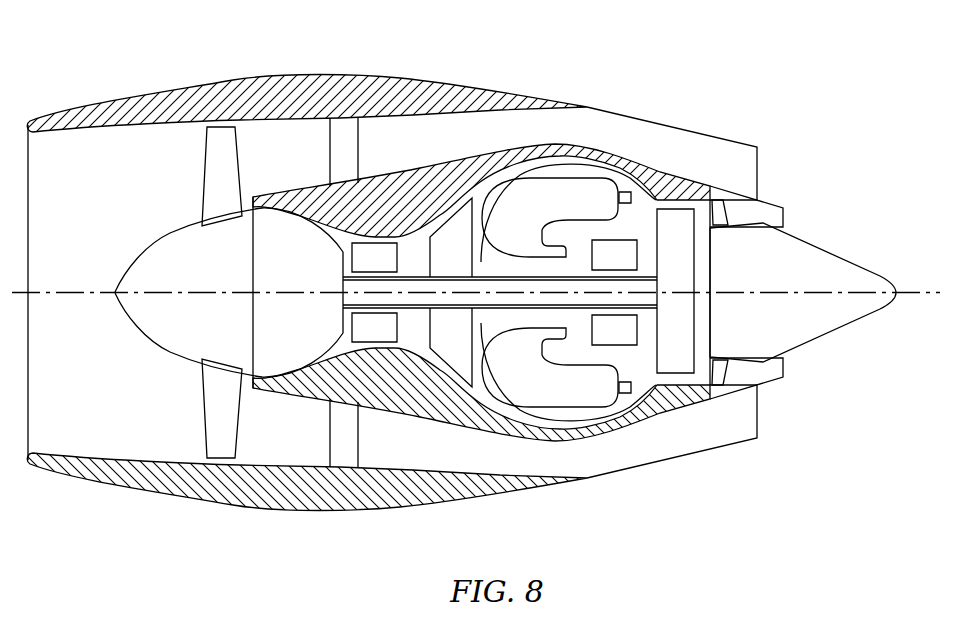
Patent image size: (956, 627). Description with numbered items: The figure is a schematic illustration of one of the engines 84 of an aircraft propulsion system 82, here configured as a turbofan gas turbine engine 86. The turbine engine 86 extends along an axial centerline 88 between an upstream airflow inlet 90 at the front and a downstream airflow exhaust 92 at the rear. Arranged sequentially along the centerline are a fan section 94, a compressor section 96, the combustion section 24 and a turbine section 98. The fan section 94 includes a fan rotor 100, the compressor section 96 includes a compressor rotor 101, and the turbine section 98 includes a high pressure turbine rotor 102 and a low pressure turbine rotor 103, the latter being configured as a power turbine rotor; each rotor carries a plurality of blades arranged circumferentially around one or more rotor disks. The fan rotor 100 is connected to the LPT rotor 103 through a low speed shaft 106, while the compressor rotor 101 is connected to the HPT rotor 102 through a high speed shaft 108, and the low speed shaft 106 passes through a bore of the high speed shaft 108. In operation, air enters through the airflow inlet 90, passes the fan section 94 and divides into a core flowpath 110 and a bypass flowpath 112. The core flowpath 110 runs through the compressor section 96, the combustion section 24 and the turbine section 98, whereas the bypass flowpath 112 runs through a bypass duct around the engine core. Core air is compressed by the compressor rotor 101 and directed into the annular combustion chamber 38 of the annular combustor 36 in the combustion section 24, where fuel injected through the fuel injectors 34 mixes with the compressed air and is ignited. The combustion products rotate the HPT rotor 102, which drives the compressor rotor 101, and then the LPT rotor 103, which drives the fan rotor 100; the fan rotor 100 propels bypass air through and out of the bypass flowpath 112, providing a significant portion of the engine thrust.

The aircraft propulsion system 82 is at (680, 92).
The engine 84 is at (118, 411).
The turbofan gas turbine engine 86 is at (222, 292).
The axial centerline 88 is at (922, 290).
The upstream airflow inlet 90 is at (30, 188).
The downstream airflow exhaust 92 is at (783, 215).
The fan section 94 is at (165, 160).
The compressor section 96 is at (412, 253).
The turbine section 98 is at (643, 228).
The fan rotor 100 is at (155, 344).
The compressor rotor 101 is at (440, 355).
The high pressure turbine rotor 102 is at (637, 328).
The low pressure turbine rotor 103 is at (697, 302).
The low speed shaft 106 is at (358, 302).
The high speed shaft 108 is at (483, 268).
The core flowpath 110 is at (747, 211).
The bypass flowpath 112 is at (722, 169).
The combustion section 24 is at (552, 176).
The fuel injector 34 is at (623, 190).
The combustor 36 is at (538, 402).
The combustion chamber 38 is at (571, 400).